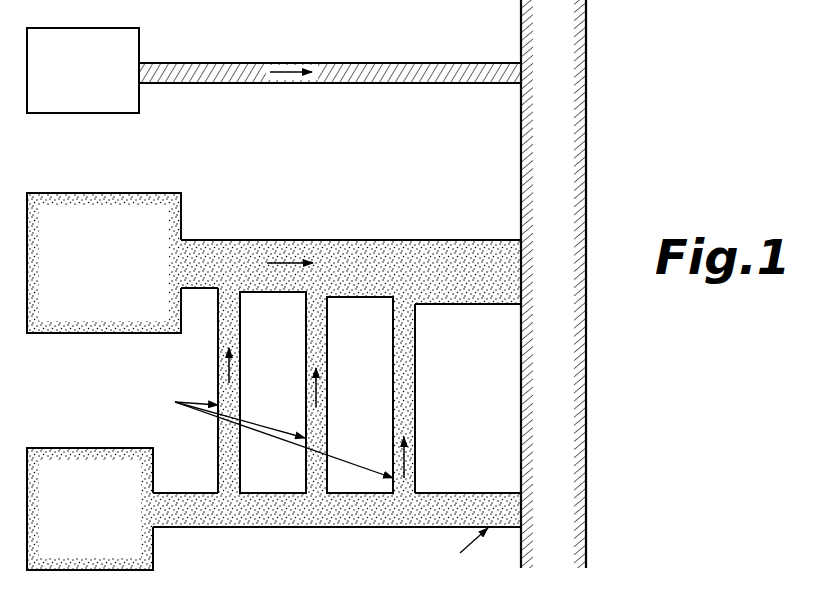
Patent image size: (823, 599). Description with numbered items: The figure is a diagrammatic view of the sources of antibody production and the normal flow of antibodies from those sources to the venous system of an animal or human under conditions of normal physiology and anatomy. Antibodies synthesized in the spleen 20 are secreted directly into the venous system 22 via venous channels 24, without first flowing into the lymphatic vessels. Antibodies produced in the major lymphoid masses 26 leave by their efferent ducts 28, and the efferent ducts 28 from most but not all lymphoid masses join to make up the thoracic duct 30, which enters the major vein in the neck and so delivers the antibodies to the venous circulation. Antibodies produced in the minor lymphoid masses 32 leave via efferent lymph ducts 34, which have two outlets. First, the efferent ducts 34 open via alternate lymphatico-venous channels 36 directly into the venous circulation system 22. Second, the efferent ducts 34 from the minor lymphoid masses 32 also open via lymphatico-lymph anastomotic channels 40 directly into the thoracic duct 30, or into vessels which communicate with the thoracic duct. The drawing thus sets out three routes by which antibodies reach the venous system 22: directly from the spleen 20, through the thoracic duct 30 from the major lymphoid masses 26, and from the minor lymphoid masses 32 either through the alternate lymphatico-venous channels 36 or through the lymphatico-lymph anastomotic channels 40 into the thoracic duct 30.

The spleen 20 is at (139, 31).
The venous system 22 is at (573, 122).
The venous channels 24 is at (408, 67).
The major lymphoid masses 26 is at (181, 193).
The efferent ducts 28 is at (185, 263).
The thoracic duct 30 is at (290, 247).
The minor lymphoid masses 32 is at (143, 460).
The efferent lymph ducts 34 is at (182, 518).
The alternate lymphatico-venous channels 36 is at (433, 503).
The lymphatico-lymph anastomotic channels 40 is at (233, 385).